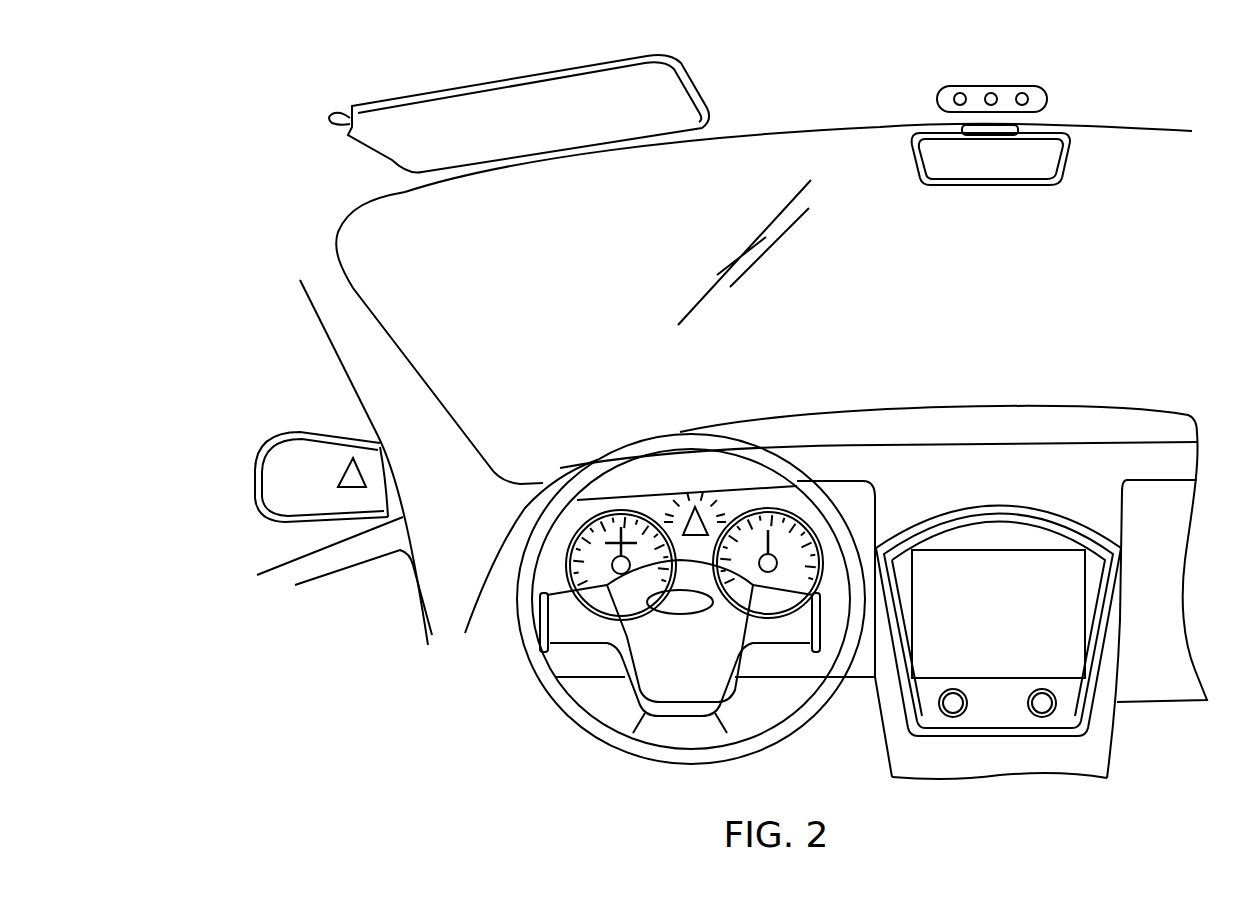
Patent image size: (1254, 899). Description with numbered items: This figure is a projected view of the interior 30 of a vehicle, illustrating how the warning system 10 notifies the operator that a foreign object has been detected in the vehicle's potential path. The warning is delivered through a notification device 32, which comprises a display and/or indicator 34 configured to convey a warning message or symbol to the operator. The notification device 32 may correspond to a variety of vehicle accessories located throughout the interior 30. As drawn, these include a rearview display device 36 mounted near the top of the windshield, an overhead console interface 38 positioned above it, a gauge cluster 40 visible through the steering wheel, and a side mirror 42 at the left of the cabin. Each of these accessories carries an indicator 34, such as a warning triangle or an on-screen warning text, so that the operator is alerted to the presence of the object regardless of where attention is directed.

The warning system 10 is at (801, 57).
The interior 30 is at (295, 252).
The notification device 32 is at (803, 468).
The indicator 34 is at (1063, 150).
The rearview display device 36 is at (1080, 165).
The overhead console interface 38 is at (1037, 95).
The gauge cluster 40 is at (585, 422).
The side mirror 42 is at (258, 528).